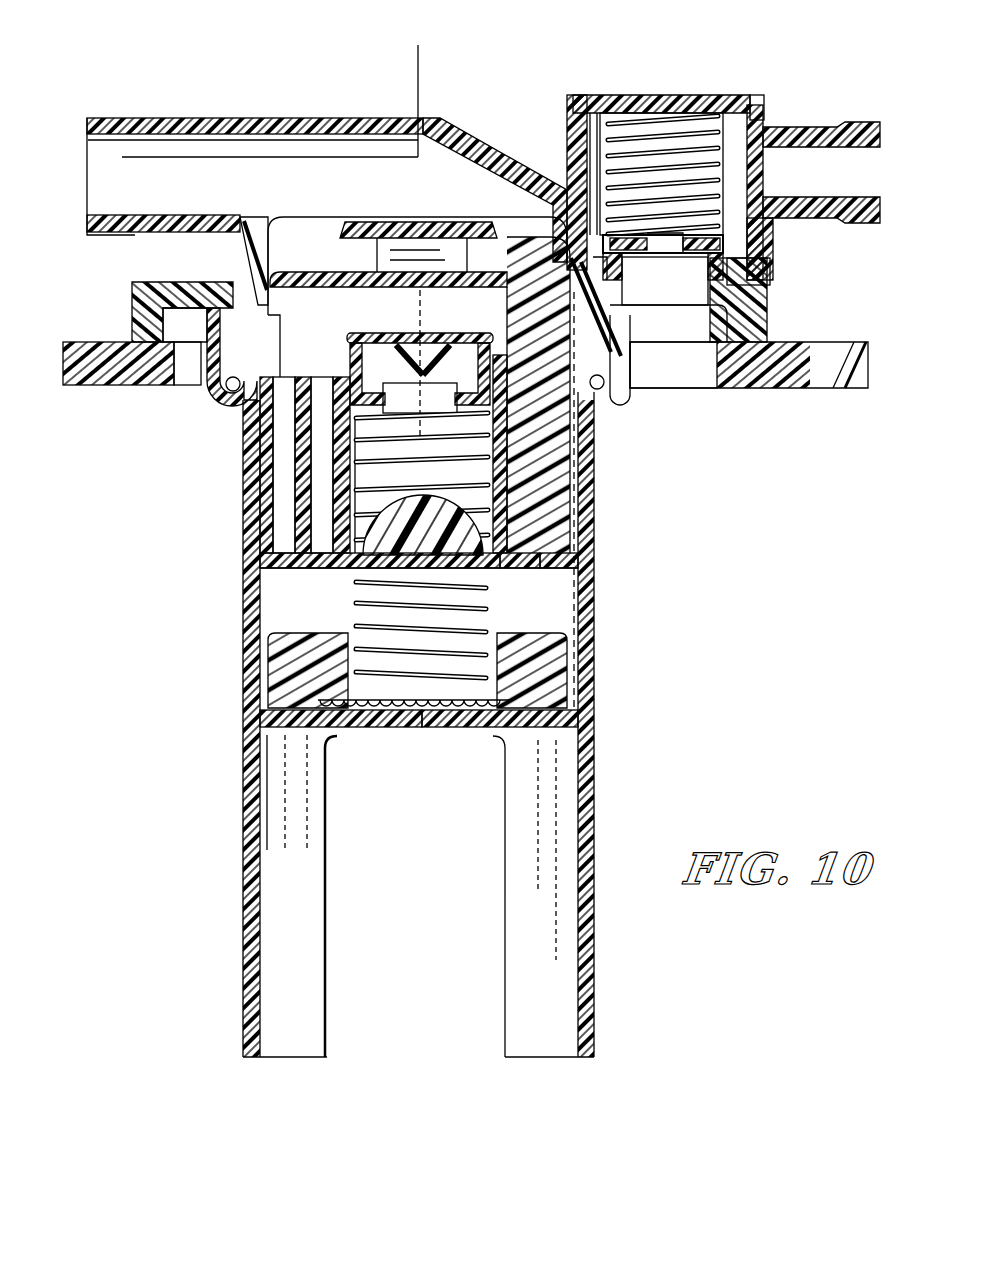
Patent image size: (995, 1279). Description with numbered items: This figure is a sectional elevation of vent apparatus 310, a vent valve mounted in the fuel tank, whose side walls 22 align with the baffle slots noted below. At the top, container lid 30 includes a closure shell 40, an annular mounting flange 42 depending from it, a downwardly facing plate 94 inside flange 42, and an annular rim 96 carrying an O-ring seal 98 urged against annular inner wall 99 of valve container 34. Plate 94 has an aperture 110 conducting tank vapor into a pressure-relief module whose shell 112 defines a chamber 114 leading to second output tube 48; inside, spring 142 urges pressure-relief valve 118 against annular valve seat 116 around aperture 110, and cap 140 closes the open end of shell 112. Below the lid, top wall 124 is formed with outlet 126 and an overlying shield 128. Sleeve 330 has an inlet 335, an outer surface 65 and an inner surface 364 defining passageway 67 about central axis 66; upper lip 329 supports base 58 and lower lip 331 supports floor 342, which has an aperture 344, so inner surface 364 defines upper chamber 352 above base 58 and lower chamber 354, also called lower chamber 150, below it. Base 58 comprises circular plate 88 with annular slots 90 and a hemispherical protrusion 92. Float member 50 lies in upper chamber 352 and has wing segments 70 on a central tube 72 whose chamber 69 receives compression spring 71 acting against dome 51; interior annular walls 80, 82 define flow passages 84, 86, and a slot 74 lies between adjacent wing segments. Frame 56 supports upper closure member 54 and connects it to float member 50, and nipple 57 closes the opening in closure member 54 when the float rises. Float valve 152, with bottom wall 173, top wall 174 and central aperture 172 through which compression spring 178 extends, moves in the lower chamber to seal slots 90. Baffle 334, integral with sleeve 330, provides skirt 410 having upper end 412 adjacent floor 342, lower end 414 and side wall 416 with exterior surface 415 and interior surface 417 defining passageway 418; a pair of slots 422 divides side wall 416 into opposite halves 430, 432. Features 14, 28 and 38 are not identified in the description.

The vent apparatus 310 is at (203, 68).
The container lid 30 is at (210, 116).
The closure shell 40 is at (316, 118).
The central axis 66 is at (420, 95).
The shield 128 is at (410, 230).
The outlet 126 is at (452, 280).
The top wall 124 is at (520, 270).
The upper chamber 352 is at (298, 306).
The neck 38 is at (232, 292).
The annular mounting flange 42 is at (132, 307).
The flange block 28 is at (187, 356).
The plate 14 is at (110, 373).
The side wall 22 is at (812, 382).
The annular rim 96 is at (226, 388).
The O-ring seal 98 is at (240, 409).
The aperture 110 is at (668, 360).
The plate 94 is at (727, 318).
The annular inner wall 99 is at (617, 315).
The pressure-relief valve 118 is at (665, 258).
The annular valve seat 116 is at (768, 265).
The chamber 114 is at (590, 172).
The shell 112 is at (603, 187).
The spring 142 is at (668, 118).
The cap 140 is at (735, 108).
The second output tube 48 is at (800, 142).
The interior annular wall 82 is at (267, 376).
The float member 50 is at (255, 460).
The wing segment 70 is at (284, 396).
The interior annular wall 80 is at (303, 374).
The flow passage 86 is at (287, 500).
The flow passage 84 is at (322, 525).
The central tube 72 is at (346, 365).
The slot 74 is at (500, 360).
The upper closure member 54 is at (385, 338).
The frame 56 is at (410, 345).
The nipple 57 is at (447, 345).
The dome 51 is at (388, 402).
The chamber 69 is at (362, 474).
The compression spring 71 is at (437, 460).
The hemispherical-shaped protrusion 92 is at (443, 510).
The outer surface 65 is at (565, 520).
The upper lip 329 is at (570, 542).
The base 58 is at (577, 563).
The circular plate 88 is at (518, 570).
The passageway 67 is at (562, 578).
The top wall 174 is at (560, 606).
The annular slot 90 is at (287, 569).
The compression spring 178 is at (443, 682).
The float valve 152 is at (262, 685).
The bottom wall 173 is at (323, 735).
The central aperture 172 is at (460, 700).
The valve container 34 is at (250, 560).
The inner surface 364 is at (250, 575).
The sleeve 330 is at (243, 621).
The skirt 410 is at (248, 870).
The side wall half 432 is at (258, 930).
The baffle 334 is at (240, 957).
The side wall 416 is at (273, 1000).
The lower chamber 354 is at (560, 622).
The lower chamber 150 is at (593, 637).
The upper end 412 is at (597, 730).
The side wall half 430 is at (600, 806).
The exterior surface 415 is at (595, 837).
The lower end 414 is at (595, 1053).
The inlet 335 is at (252, 1058).
The slot 422 is at (325, 1017).
The lower lip 331 is at (265, 730).
The floor 342 is at (577, 733).
The aperture 344 is at (397, 728).
The interior surface 417 is at (535, 895).
The passageway 418 is at (486, 1025).